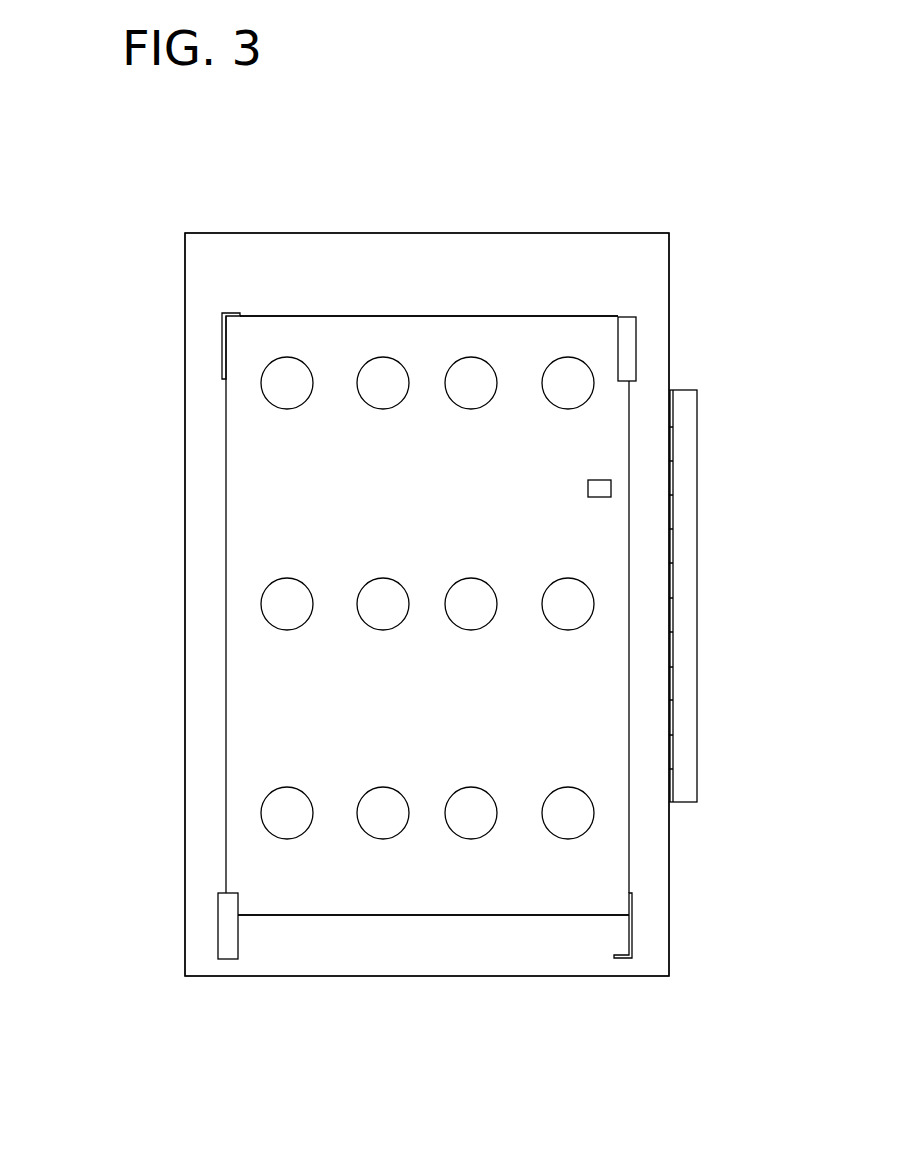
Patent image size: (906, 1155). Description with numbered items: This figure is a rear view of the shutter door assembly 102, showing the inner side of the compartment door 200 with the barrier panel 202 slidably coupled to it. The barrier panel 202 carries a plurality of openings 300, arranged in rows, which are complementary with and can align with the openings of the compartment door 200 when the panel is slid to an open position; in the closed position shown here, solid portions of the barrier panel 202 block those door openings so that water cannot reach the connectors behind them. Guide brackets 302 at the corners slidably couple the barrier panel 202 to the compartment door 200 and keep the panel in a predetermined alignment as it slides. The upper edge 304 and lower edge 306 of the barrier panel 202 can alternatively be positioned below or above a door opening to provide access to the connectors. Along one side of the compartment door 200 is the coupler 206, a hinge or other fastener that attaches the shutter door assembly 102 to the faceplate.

The shutter door assembly 102 is at (136, 240).
The compartment door 200 is at (278, 957).
The barrier panel 202 is at (256, 697).
The coupler 206 is at (686, 610).
The openings 300 is at (567, 383).
The guide brackets 302 is at (227, 930).
The upper edge 304 is at (332, 316).
The lower edge 306 is at (422, 917).